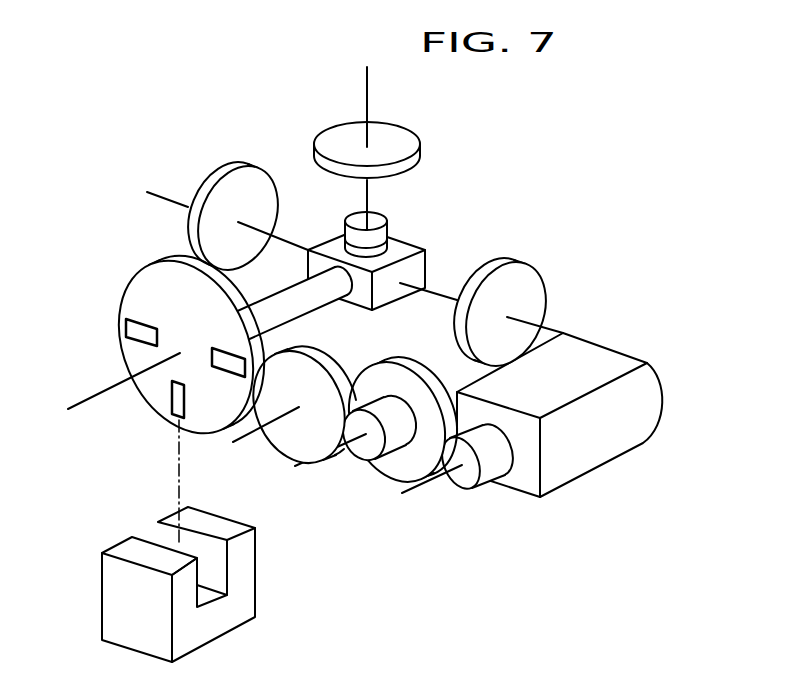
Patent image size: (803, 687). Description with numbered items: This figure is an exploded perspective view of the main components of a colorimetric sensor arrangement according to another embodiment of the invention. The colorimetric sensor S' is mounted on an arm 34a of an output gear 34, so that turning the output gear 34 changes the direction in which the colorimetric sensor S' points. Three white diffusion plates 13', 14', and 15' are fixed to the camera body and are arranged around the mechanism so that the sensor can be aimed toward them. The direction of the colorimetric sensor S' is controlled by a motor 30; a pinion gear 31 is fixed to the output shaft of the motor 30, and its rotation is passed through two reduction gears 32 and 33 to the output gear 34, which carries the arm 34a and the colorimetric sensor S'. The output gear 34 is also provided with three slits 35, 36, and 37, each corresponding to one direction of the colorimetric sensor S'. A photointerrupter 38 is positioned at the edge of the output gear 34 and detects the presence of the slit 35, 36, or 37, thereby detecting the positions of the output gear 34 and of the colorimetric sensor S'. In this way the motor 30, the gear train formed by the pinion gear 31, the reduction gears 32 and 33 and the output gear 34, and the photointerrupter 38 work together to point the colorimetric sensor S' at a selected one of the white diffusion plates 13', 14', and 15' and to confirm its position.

The white diffusion plate 13' is at (536, 306).
The white diffusion plate 14' is at (399, 148).
The white diffusion plate 15' is at (221, 199).
The colorimetric sensor S' is at (416, 199).
The motor 30 is at (603, 443).
The pinion gear 31 is at (468, 476).
The reduction gear 32 is at (371, 458).
The reduction gear 33 is at (328, 364).
The output gear 34 is at (133, 280).
The arm 34a is at (428, 260).
The slit 35 is at (128, 335).
The slit 36 is at (177, 393).
The slit 37 is at (295, 330).
The photointerrupter 38 is at (146, 584).